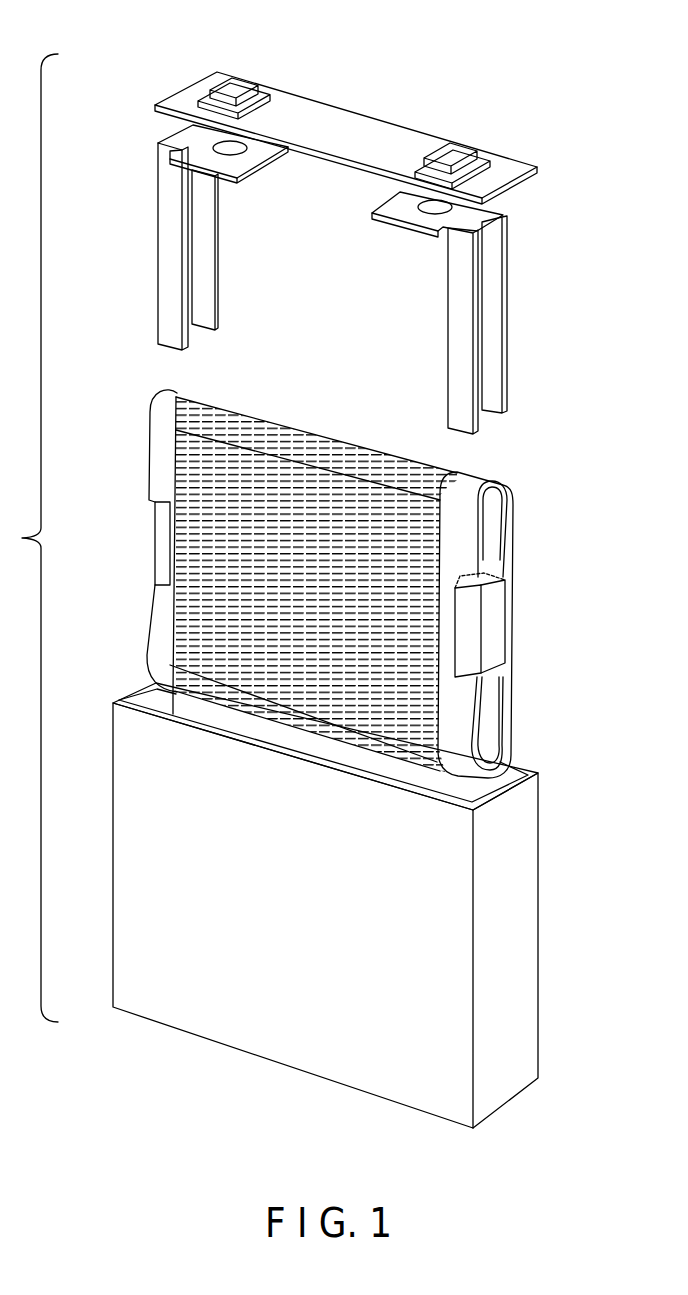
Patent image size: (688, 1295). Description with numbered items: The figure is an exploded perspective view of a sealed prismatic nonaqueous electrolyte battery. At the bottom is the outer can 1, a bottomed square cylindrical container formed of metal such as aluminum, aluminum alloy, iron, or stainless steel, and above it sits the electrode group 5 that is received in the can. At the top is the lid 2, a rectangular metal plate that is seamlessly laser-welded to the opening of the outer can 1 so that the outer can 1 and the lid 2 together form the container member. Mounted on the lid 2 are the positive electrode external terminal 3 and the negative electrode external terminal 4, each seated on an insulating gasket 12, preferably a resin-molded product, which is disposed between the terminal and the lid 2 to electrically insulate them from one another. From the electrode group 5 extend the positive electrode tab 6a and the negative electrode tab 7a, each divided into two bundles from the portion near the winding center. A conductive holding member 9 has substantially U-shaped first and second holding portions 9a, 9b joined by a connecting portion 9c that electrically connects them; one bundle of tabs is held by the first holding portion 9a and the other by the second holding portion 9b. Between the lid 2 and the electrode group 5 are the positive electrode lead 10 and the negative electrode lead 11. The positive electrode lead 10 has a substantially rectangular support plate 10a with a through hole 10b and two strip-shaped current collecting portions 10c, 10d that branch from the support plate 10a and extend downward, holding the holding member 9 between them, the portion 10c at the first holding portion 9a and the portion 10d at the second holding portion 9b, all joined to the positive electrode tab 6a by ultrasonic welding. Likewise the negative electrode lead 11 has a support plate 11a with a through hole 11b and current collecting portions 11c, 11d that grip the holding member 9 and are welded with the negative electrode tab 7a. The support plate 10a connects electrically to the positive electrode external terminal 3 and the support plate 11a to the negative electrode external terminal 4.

The outer can 1 is at (520, 935).
The lid 2 is at (351, 120).
The positive electrode external terminal 3 is at (236, 96).
The negative electrode external terminal 4 is at (456, 160).
The electrode group 5 is at (340, 426).
The positive electrode tab 6a is at (163, 448).
The negative electrode tab 7a is at (465, 528).
The conductive holding member 9 is at (350, 589).
The first holding portion 9a is at (468, 652).
The second holding portion 9b is at (507, 618).
The connecting portion 9c is at (518, 585).
The positive electrode lead 10 is at (195, 237).
The support plate 10a is at (263, 147).
The through hole 10b is at (233, 150).
The current collecting portion 10c is at (170, 296).
The current collecting portion 10d is at (204, 292).
The negative electrode lead 11 is at (483, 312).
The support plate 11a is at (497, 201).
The through hole 11b is at (427, 209).
The current collecting portion 11c is at (457, 345).
The current collecting portion 11d is at (493, 342).
The insulating gasket 12 is at (266, 97).